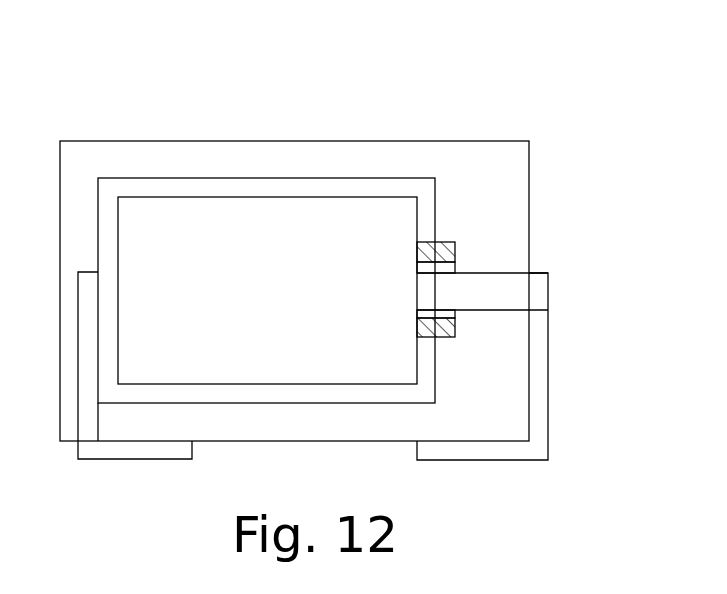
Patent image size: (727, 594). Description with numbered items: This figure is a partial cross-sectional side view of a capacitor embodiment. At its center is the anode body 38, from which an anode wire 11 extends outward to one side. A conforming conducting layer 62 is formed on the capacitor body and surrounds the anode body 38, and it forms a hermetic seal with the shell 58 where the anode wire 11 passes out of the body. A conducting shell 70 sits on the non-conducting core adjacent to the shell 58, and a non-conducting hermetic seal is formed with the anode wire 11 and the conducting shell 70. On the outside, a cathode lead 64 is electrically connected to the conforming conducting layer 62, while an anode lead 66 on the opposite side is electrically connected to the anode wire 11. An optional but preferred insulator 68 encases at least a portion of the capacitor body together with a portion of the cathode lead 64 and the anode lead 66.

The anode wire 11 is at (502, 291).
The anode body 38 is at (175, 232).
The shell 58 is at (455, 244).
The conforming conducting layer 62 is at (215, 187).
The cathode lead 64 is at (126, 448).
The anode lead 66 is at (502, 449).
The insulator 68 is at (343, 162).
The conducting shell 70 is at (445, 267).